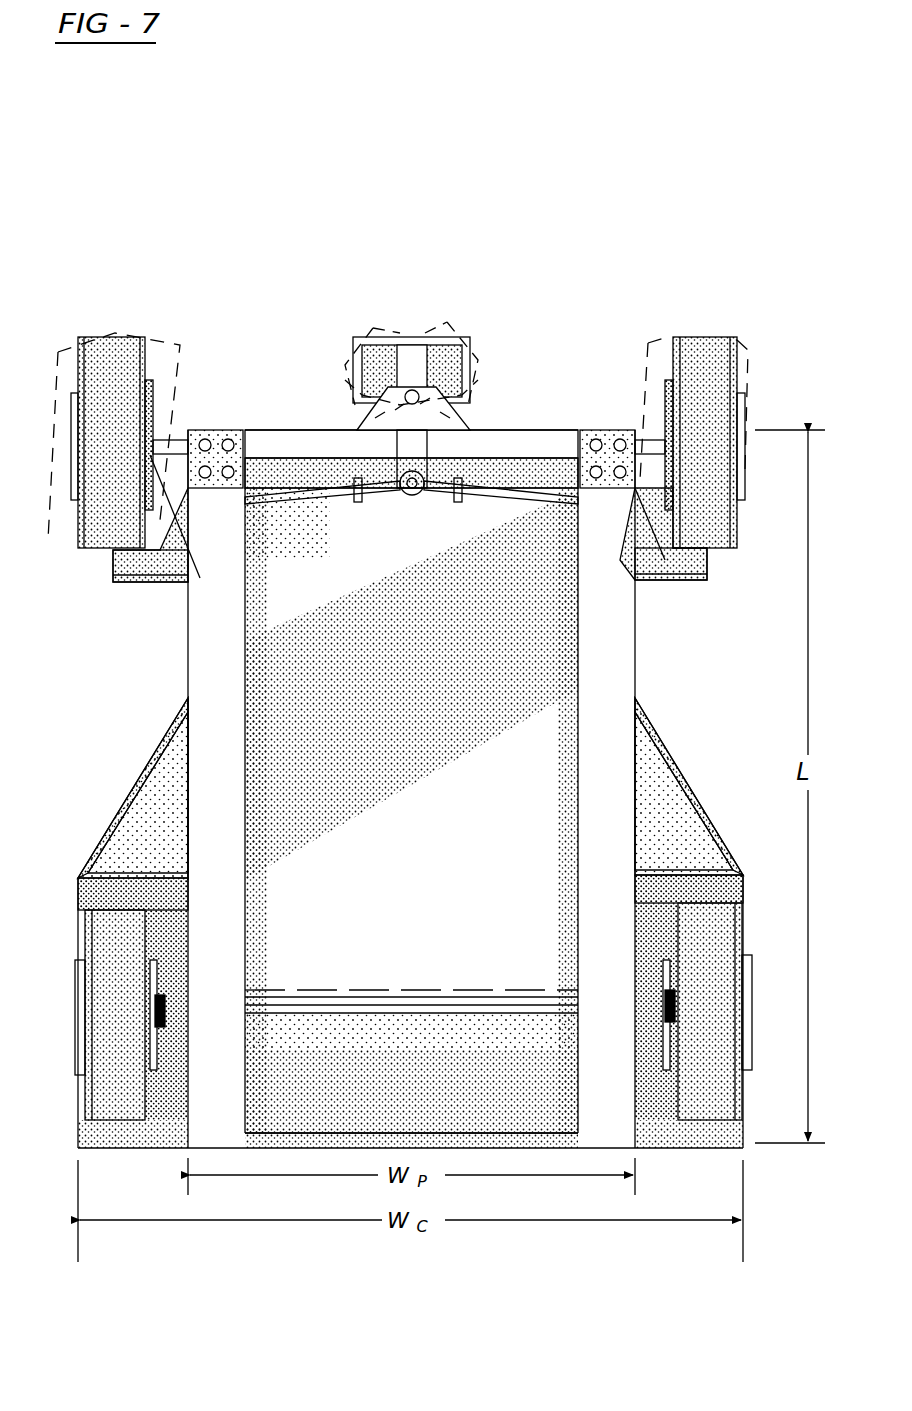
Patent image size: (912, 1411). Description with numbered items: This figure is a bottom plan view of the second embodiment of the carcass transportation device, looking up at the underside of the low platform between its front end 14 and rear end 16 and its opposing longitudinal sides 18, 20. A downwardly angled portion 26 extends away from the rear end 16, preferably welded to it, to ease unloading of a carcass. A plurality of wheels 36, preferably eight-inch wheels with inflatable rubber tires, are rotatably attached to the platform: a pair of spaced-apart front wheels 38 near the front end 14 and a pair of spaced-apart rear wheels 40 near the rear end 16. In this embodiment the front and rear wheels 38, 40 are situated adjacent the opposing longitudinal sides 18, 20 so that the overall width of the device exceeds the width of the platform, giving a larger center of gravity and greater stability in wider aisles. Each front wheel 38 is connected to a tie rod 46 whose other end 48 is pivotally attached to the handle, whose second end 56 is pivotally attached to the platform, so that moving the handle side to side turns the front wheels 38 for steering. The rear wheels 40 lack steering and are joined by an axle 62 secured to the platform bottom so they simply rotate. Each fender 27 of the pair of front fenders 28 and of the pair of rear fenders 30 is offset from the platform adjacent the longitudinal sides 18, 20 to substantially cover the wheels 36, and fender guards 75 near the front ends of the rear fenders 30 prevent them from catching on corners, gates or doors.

The front end 14 is at (538, 418).
The rear end 16 is at (548, 1012).
The longitudinal side 18 is at (166, 688).
The longitudinal side 20 is at (646, 657).
The downwardly angled portion 26 is at (370, 1030).
The fender 27 is at (140, 566).
The pair of front fenders 28 is at (640, 517).
The pair of rear fenders 30 is at (650, 885).
The wheels 36 is at (128, 365).
The front wheels 38 is at (620, 577).
The rear wheels 40 is at (698, 963).
The tie rod 46 is at (352, 506).
The other end 48 is at (368, 500).
The second end 56 is at (452, 322).
The axle 62 is at (445, 1000).
The fender guard 75 is at (690, 790).